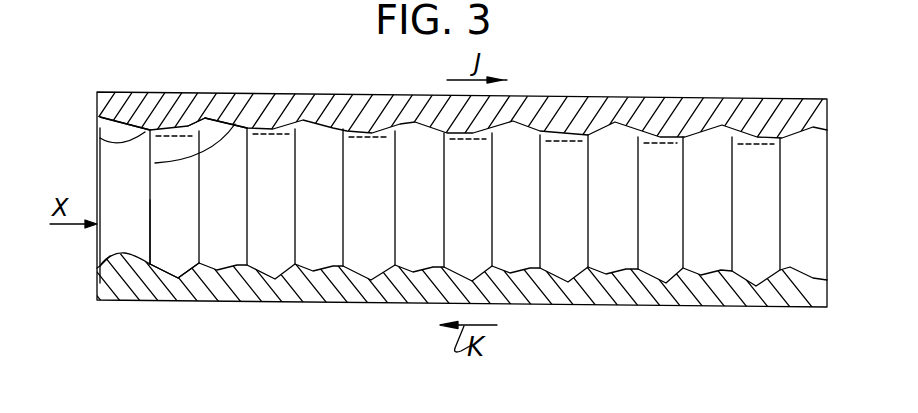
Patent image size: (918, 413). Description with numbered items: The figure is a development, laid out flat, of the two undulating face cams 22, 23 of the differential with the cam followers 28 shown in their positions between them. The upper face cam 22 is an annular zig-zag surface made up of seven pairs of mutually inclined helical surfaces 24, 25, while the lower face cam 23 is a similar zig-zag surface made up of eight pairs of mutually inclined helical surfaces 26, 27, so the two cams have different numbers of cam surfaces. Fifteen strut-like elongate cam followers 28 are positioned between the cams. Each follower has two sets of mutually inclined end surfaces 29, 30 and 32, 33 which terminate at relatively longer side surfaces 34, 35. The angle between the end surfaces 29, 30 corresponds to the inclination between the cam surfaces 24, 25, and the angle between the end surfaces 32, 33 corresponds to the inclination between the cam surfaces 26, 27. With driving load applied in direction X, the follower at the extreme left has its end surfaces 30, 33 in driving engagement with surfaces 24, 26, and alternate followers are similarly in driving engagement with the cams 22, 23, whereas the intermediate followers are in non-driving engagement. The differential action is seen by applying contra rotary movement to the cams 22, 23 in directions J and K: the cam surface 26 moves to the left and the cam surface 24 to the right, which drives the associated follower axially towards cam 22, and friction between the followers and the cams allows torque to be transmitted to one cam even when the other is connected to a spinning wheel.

The undulating face cam 22 is at (528, 98).
The undulating face cam 23 is at (90, 292).
The helical surface 24 is at (155, 130).
The helical surface 25 is at (192, 120).
The helical surface 26 is at (110, 270).
The helical surface 27 is at (163, 268).
The cam follower 28 is at (118, 175).
The end surface 29 is at (108, 114).
The end surface 30 is at (100, 138).
The end surface 32 is at (102, 255).
The end surface 33 is at (103, 263).
The side surface 34 is at (242, 127).
The side surface 35 is at (150, 210).